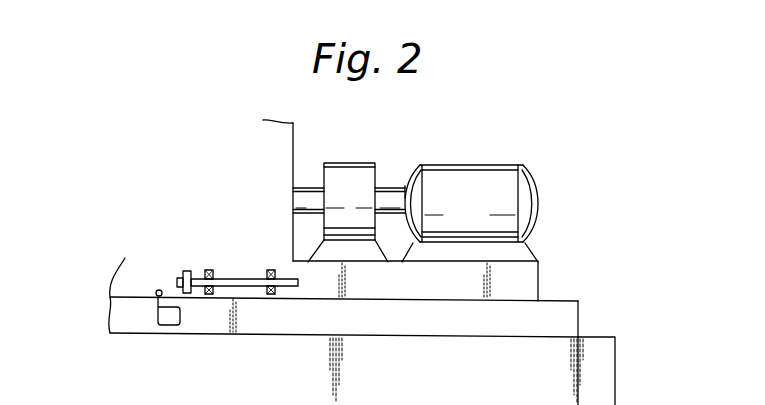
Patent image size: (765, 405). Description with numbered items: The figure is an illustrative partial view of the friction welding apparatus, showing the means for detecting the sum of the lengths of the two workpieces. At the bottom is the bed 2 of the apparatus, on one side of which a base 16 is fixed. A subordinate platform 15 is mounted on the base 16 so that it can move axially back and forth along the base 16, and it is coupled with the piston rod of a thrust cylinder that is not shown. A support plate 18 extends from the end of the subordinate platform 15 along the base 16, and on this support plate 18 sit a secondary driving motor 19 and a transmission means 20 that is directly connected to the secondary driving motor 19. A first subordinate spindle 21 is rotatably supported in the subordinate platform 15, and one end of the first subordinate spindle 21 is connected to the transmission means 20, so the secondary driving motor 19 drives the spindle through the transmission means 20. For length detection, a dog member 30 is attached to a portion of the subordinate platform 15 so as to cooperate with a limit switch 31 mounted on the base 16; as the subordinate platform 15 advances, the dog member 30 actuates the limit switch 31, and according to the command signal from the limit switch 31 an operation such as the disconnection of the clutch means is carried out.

The bed 2 is at (616, 383).
The subordinate platform 15 is at (286, 140).
The base 16 is at (375, 330).
The support plate 18 is at (530, 278).
The secondary driving motor 19 is at (460, 172).
The transmission means 20 is at (348, 172).
The first subordinate spindle 21 is at (303, 198).
The dog member 30 is at (189, 270).
The limit switch 31 is at (172, 322).